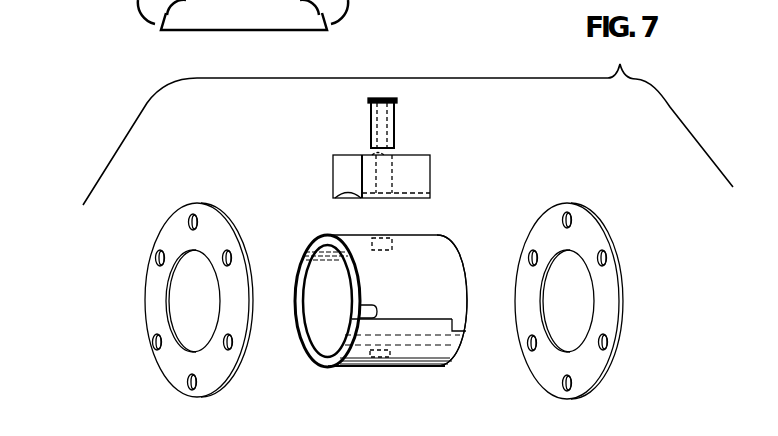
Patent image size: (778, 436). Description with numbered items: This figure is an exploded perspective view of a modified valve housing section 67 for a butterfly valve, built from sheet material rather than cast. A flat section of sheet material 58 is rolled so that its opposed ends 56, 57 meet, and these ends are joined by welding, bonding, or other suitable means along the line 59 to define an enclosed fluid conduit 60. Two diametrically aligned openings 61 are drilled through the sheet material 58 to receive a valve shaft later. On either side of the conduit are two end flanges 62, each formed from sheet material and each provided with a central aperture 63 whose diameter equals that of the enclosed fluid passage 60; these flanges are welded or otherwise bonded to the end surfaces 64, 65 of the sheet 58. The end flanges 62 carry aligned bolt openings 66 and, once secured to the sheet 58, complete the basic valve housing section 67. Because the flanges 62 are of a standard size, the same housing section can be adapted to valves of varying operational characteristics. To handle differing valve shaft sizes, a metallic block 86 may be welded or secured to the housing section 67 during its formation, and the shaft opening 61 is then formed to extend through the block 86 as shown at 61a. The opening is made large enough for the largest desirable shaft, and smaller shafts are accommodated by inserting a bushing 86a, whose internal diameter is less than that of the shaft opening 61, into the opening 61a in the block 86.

The opposed end 56 is at (466, 331).
The opposed end 57 is at (363, 310).
The sheet material 58 is at (357, 368).
The joining line 59 is at (442, 318).
The enclosed fluid conduit 60 is at (325, 333).
The shaft opening 61 is at (391, 238).
The block opening 61a is at (373, 152).
The end flange 62 is at (152, 279).
The central aperture 63 is at (170, 313).
The end surface 64 is at (315, 240).
The end surface 65 is at (460, 254).
The bolt opening 66 is at (157, 347).
The valve housing section 67 is at (430, 380).
The metallic block 86 is at (418, 177).
The bushing 86a is at (393, 123).